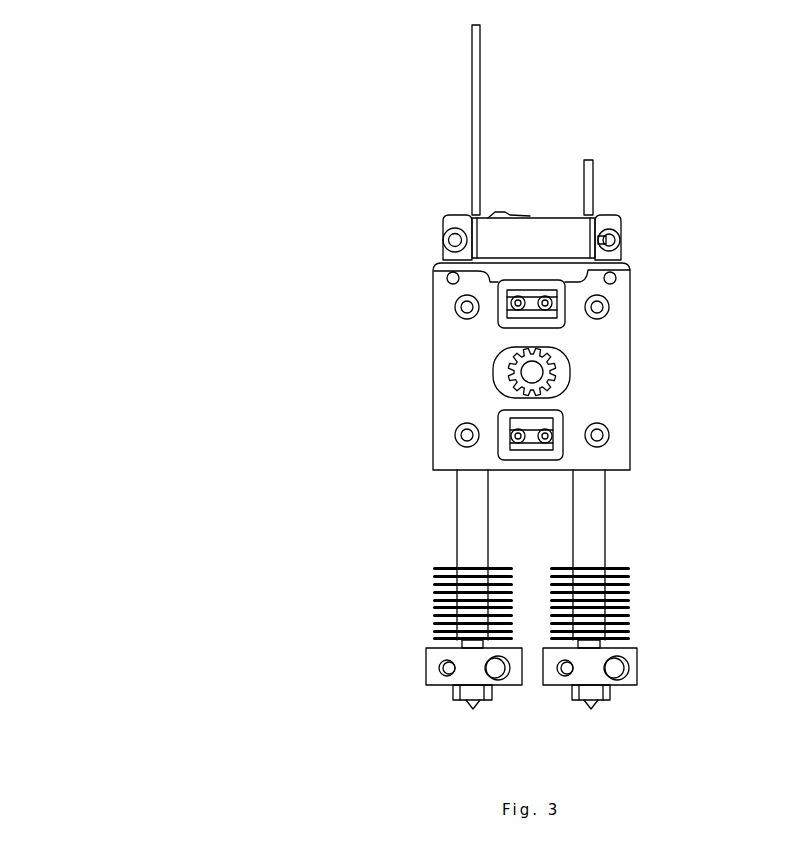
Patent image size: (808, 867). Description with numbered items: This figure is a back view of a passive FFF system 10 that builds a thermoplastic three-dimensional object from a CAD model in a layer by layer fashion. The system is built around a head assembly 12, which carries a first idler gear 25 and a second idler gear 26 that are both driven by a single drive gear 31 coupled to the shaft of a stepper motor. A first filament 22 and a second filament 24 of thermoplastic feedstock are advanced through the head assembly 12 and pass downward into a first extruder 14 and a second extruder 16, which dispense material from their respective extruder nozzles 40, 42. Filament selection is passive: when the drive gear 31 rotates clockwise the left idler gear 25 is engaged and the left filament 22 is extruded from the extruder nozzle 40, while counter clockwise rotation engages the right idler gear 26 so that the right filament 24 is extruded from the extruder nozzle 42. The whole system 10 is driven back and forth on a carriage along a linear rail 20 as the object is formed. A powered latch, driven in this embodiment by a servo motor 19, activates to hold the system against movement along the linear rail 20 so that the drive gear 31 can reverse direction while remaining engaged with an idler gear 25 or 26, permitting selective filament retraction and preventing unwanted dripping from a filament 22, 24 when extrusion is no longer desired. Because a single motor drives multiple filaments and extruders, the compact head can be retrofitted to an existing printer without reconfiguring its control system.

The passive FFF system 10 is at (188, 225).
The head assembly 12 is at (660, 293).
The first extruder 14 is at (614, 657).
The second extruder 16 is at (436, 655).
The servo motor 19 is at (535, 218).
The linear rail 20 is at (552, 313).
The first filament 22 is at (593, 180).
The second filament 24 is at (471, 135).
The first idler gear 25 is at (558, 367).
The second idler gear 26 is at (498, 360).
The drive gear 31 is at (512, 377).
The extruder nozzle 40 is at (588, 707).
The extruder nozzle 42 is at (472, 707).